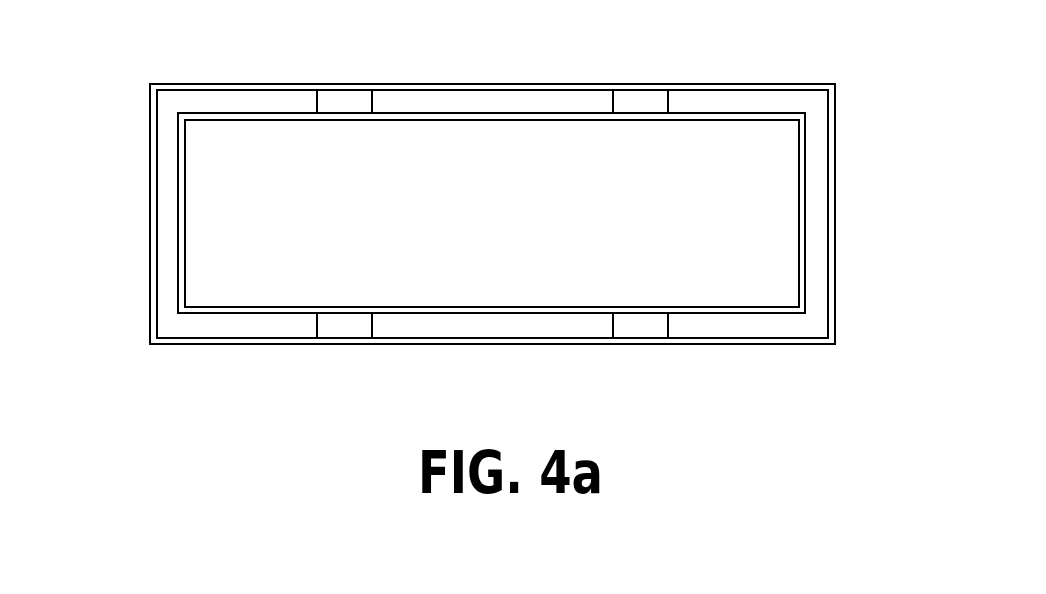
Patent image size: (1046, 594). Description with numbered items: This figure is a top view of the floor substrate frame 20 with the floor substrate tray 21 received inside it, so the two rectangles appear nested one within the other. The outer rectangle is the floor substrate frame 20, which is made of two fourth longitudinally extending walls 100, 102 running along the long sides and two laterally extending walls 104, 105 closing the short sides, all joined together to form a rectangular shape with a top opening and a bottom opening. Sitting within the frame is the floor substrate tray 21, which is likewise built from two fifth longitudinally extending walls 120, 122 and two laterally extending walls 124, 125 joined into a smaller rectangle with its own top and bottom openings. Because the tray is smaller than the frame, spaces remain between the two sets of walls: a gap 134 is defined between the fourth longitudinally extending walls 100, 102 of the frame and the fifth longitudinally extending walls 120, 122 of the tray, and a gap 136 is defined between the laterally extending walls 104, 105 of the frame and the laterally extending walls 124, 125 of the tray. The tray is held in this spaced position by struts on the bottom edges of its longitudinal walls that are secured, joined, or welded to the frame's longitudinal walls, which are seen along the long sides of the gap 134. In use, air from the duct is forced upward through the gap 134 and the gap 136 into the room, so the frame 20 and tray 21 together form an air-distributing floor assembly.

The floor substrate frame 20 is at (148, 300).
The floor substrate tray 21 is at (253, 122).
The fourth longitudinally extending wall 100 is at (717, 85).
The fourth longitudinally extending wall 102 is at (725, 345).
The laterally extending wall 104 is at (148, 177).
The laterally extending wall 105 is at (835, 147).
The fifth longitudinally extending wall 120 is at (287, 120).
The fifth longitudinally extending wall 122 is at (297, 313).
The laterally extending wall 124 is at (178, 140).
The laterally extending wall 125 is at (803, 202).
The gap 134 is at (452, 105).
The gap 136 is at (165, 232).